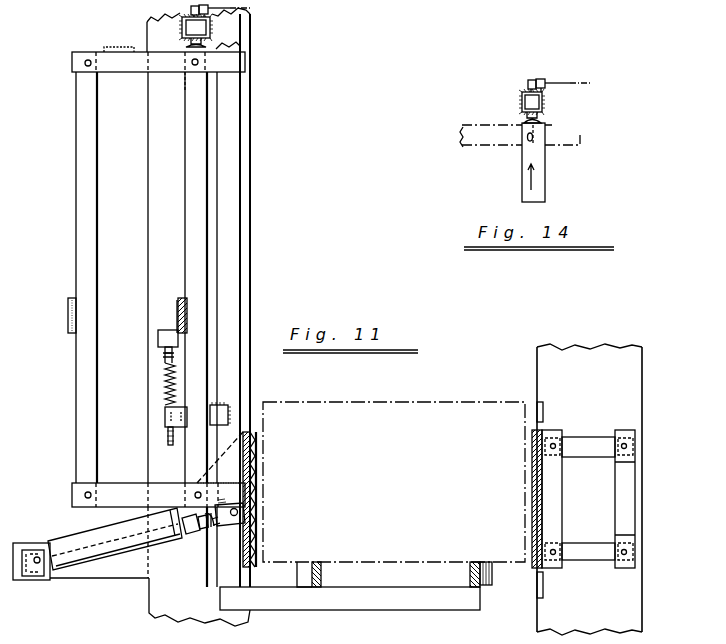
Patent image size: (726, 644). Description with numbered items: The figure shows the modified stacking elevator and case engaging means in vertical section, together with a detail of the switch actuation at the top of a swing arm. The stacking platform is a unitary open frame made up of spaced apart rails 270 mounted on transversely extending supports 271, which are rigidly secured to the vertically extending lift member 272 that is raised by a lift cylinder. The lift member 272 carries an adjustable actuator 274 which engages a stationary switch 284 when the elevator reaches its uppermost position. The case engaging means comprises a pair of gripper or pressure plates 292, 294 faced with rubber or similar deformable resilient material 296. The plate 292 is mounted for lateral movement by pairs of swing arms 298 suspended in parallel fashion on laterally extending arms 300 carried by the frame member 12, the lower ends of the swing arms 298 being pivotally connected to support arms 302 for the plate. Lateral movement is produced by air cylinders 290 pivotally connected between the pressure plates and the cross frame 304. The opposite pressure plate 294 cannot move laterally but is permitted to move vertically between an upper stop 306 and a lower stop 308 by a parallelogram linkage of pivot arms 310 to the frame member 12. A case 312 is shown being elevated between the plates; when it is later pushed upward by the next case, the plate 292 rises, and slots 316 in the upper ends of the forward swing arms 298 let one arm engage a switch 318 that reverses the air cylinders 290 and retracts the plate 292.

In FIG. 11, the frame member 12 is at (243, 97).
In FIG. 11, the rails 270 is at (322, 578).
In FIG. 11, the transversely extending supports 271 is at (382, 598).
In FIG. 11, the lift member 272 is at (232, 279).
In FIG. 11, the adjustable actuator 274 is at (165, 380).
In FIG. 11, the stationary switch 284 is at (165, 360).
In FIG. 11, the air cylinder 290 is at (95, 548).
In FIG. 11, the pressure plate 292 is at (258, 456).
In FIG. 11, the pressure plate 294 is at (535, 470).
In FIG. 11, the deformable resilient material 296 is at (258, 488).
In FIG. 11, the swing arms 298 is at (192, 188).
In FIG. 14, the swing arms 298 is at (546, 177).
In FIG. 11, the laterally extending arms 300 is at (106, 52).
In FIG. 14, the laterally extending arms 300 is at (500, 148).
In FIG. 11, the support arms 302 is at (119, 492).
In FIG. 11, the cross frame 304 is at (68, 318).
In FIG. 11, the upper stop 306 is at (543, 414).
In FIG. 11, the lower stop 308 is at (543, 588).
In FIG. 11, the pivot arms 310 is at (592, 448).
In FIG. 11, the case 312 is at (450, 399).
In FIG. 11, the slots 316 is at (188, 70).
In FIG. 14, the slots 316 is at (540, 140).
In FIG. 11, the switch 318 is at (183, 26).
In FIG. 14, the switch 318 is at (530, 101).